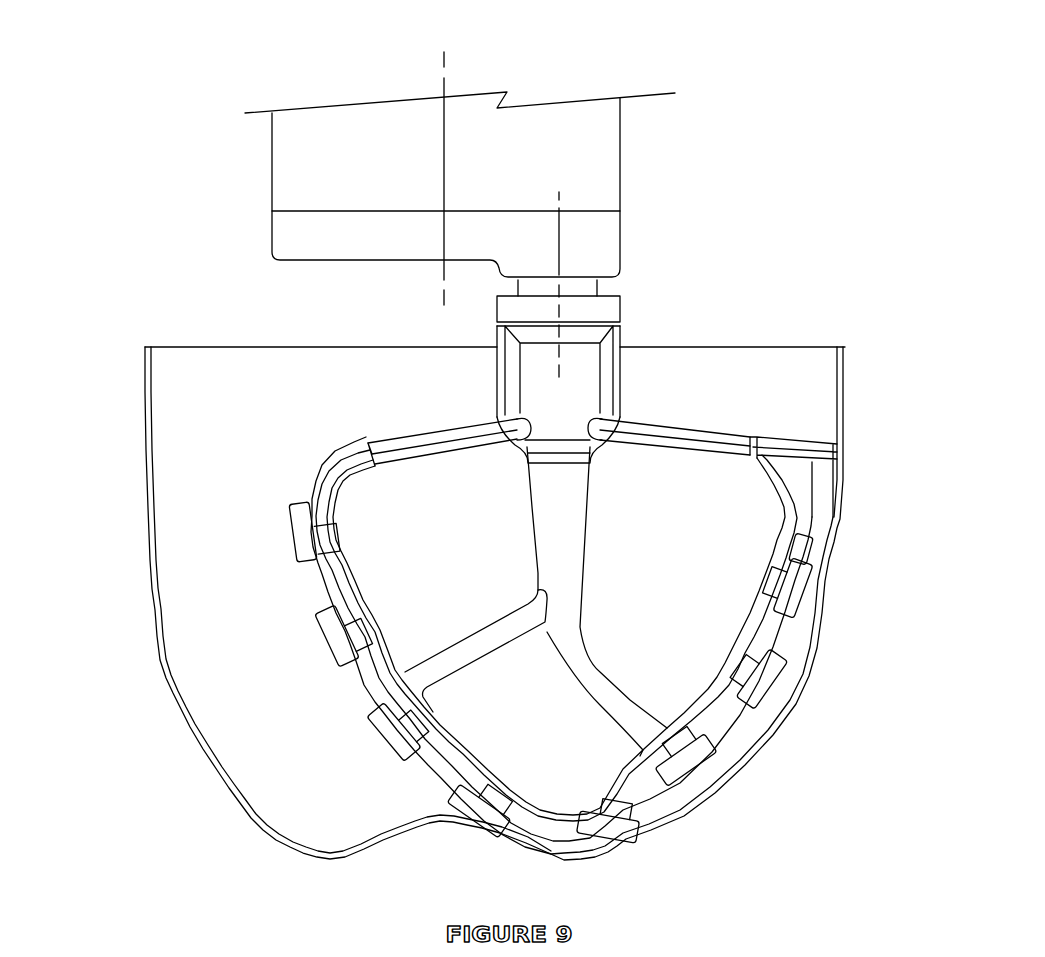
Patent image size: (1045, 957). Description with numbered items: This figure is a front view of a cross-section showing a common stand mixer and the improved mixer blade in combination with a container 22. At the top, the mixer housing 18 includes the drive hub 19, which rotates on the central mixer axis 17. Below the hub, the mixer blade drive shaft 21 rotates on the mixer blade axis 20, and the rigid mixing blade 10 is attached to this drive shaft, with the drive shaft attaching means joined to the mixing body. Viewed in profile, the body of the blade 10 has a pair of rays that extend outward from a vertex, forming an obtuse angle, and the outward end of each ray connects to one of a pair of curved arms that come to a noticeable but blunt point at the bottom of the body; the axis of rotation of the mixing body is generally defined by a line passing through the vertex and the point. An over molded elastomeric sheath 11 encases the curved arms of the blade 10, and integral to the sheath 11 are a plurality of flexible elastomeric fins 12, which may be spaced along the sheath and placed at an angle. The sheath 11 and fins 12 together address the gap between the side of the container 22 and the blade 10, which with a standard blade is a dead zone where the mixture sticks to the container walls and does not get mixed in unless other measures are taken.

The mixing blade 10 is at (587, 548).
The over molded elastomeric sheath 11 is at (330, 470).
The elastomeric fins 12 is at (817, 582).
The central mixer axis 17 is at (443, 155).
The mixer housing 18 is at (570, 140).
The drive hub 19 is at (585, 235).
The mixer blade axis 20 is at (560, 257).
The mixer blade drive shaft 21 is at (585, 282).
The container 22 is at (145, 492).